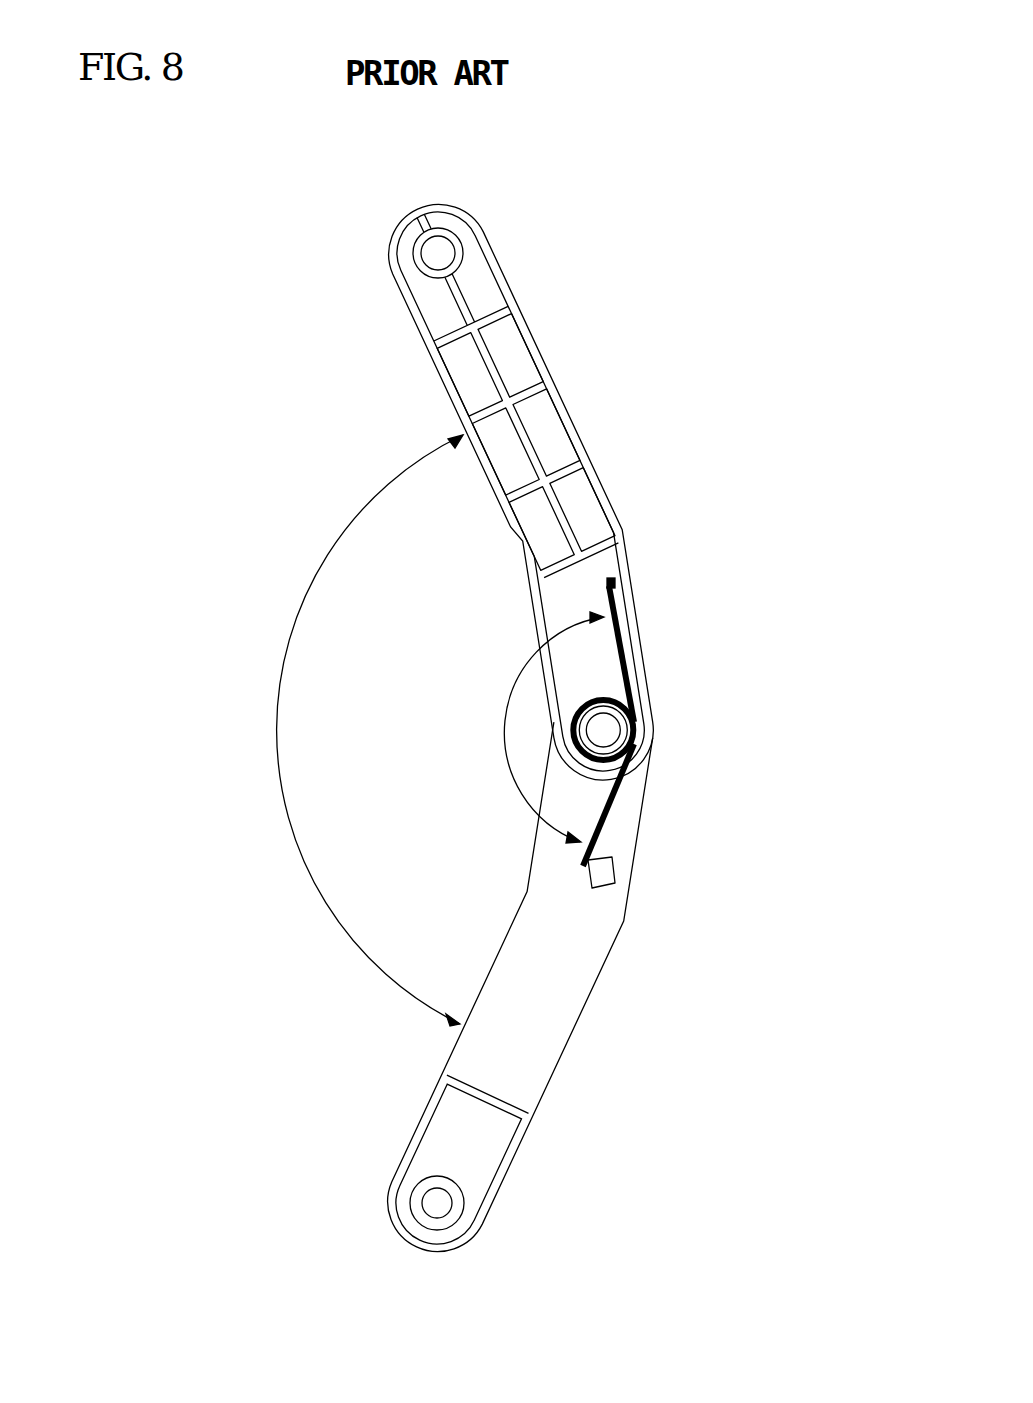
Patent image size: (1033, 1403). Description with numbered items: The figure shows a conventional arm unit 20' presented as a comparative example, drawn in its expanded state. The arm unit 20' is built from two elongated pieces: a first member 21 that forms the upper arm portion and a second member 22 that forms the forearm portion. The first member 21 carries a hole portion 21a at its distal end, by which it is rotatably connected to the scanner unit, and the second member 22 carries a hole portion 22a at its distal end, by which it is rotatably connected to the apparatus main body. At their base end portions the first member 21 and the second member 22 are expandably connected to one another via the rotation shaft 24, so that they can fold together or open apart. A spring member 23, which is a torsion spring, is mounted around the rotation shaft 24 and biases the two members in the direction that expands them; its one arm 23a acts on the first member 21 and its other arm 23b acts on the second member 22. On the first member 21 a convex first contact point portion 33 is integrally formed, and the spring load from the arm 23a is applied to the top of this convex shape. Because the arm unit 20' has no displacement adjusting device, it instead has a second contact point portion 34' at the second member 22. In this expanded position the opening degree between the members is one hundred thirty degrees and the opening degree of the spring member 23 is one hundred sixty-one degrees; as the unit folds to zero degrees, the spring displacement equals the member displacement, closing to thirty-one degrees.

The conventional arm unit 20' is at (247, 272).
The first member 21 is at (566, 400).
The hole portion 21a is at (437, 253).
The second member 22 is at (573, 1033).
The hole portion 22a is at (440, 1203).
The spring member 23 is at (637, 743).
The one arm 23a is at (623, 635).
The another arm 23b is at (602, 832).
The rotation shaft 24 is at (636, 712).
The first contact point portion 33 is at (610, 587).
The second contact point portion 34' is at (641, 901).